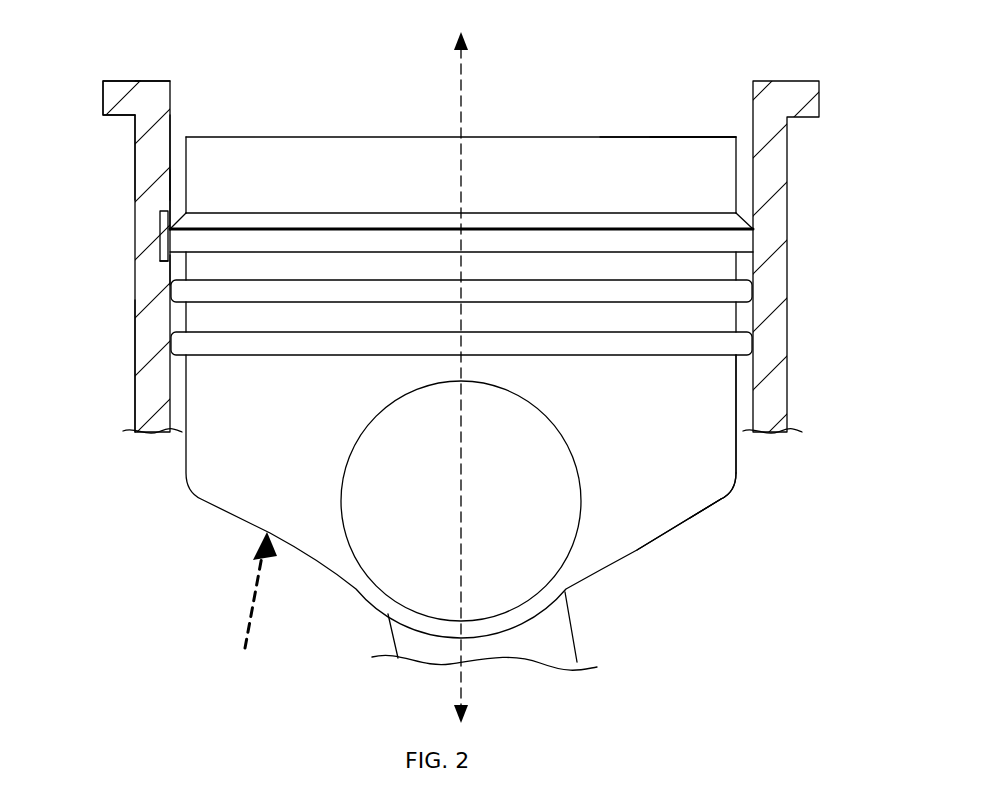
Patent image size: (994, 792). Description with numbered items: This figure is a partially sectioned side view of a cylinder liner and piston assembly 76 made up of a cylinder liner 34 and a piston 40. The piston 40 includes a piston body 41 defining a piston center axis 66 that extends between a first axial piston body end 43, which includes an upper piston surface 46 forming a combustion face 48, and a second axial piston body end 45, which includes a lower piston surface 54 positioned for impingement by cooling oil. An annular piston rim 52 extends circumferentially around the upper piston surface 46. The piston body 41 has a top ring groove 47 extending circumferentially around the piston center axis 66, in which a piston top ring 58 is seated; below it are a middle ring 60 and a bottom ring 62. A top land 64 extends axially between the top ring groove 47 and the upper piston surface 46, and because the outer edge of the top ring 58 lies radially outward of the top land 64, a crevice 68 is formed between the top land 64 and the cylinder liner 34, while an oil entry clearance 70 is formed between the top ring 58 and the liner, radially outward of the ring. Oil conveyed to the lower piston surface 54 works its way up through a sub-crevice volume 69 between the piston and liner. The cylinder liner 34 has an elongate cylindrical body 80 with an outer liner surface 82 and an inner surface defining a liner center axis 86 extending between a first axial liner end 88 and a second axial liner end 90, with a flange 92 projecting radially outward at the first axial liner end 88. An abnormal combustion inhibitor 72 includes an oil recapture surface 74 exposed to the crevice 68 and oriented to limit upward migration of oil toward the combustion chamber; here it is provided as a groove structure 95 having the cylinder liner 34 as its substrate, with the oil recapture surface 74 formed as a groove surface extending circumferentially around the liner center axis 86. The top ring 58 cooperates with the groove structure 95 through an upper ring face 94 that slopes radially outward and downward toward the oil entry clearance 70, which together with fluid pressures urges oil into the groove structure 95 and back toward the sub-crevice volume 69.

The cylinder liner 34 is at (120, 254).
The piston 40 is at (497, 322).
The piston body 41 is at (722, 392).
The first axial piston body end 43 is at (720, 112).
The second axial piston body end 45 is at (748, 504).
The upper piston surface 46 is at (636, 137).
The top ring groove 47 is at (253, 256).
The combustion face 48 is at (385, 124).
The annular piston rim 52 is at (203, 135).
The lower piston surface 54 is at (676, 538).
The piston top ring 58 is at (461, 217).
The middle ring 60 is at (322, 291).
The bottom ring 62 is at (338, 352).
The top land 64 is at (184, 193).
The piston center axis 66 is at (506, 377).
The liner center axis 86 is at (462, 90).
The crevice 68 is at (186, 148).
The sub-crevice volume 69 is at (186, 318).
The oil entry clearance 70 is at (163, 265).
The abnormal combustion inhibitor 72 is at (160, 280).
The oil recapture surface 74 is at (170, 250).
The cylinder liner and piston assembly 76 is at (691, 66).
The elongate cylindrical body 80 is at (141, 357).
The outer liner surface 82 is at (141, 144).
The first axial liner end 88 is at (161, 73).
The second axial liner end 90 is at (140, 452).
The flange 92 is at (112, 95).
The upper ring face 94 is at (322, 223).
The groove structure 95 is at (188, 209).